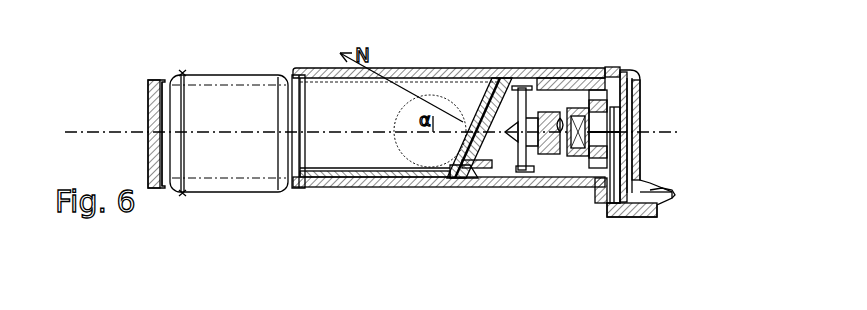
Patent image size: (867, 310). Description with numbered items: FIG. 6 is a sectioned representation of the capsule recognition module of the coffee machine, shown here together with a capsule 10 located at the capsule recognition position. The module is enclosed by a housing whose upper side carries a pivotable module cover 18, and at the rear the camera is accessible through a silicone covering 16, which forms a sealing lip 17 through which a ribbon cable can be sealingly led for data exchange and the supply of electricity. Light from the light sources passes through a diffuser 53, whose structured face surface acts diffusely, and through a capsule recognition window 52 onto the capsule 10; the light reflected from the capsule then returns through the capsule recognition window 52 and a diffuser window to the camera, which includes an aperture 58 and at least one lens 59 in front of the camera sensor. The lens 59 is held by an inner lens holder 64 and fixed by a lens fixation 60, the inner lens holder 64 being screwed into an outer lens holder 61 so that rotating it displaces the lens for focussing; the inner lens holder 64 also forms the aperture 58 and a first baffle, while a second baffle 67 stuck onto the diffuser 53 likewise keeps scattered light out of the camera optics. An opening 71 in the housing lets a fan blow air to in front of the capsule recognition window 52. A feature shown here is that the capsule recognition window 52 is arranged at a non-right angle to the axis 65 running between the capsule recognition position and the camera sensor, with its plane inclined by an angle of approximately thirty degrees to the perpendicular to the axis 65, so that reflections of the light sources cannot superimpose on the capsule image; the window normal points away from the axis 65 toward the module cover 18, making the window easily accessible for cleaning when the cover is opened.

The capsule 10 is at (193, 112).
The silicone covering 16 is at (635, 147).
The sealing lip 17 is at (670, 197).
The module cover 18 is at (477, 130).
The capsule recognition window 52 is at (485, 110).
The diffuser 53 is at (563, 87).
The aperture 58 is at (570, 130).
The lens 59 is at (580, 125).
The lens fixation 60 is at (593, 147).
The outer lens holder 61 is at (620, 80).
The inner lens holder 64 is at (538, 150).
The axis 65 is at (130, 132).
The second baffle 67 is at (488, 143).
The opening 71 is at (430, 140).